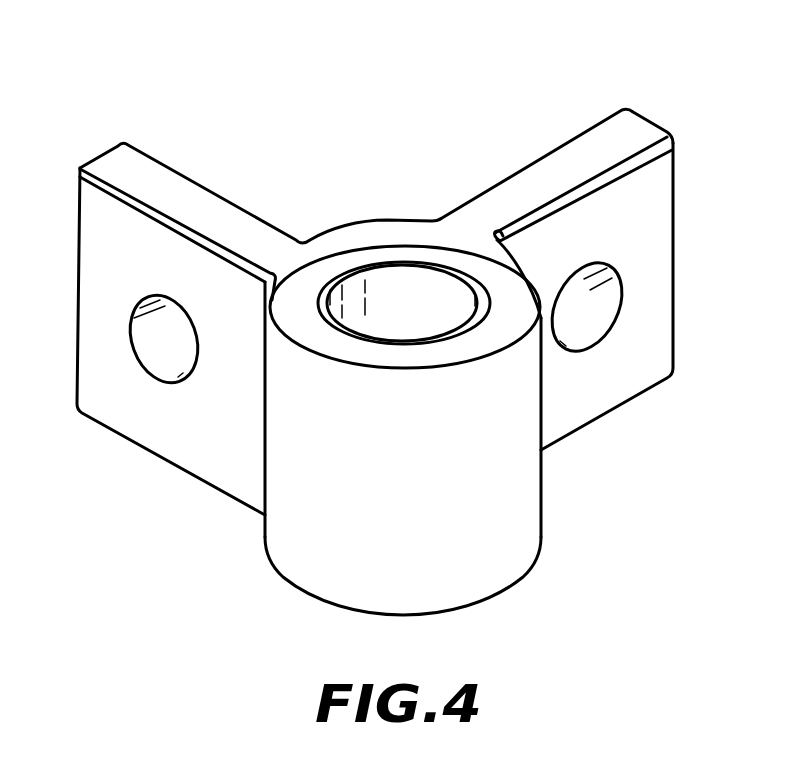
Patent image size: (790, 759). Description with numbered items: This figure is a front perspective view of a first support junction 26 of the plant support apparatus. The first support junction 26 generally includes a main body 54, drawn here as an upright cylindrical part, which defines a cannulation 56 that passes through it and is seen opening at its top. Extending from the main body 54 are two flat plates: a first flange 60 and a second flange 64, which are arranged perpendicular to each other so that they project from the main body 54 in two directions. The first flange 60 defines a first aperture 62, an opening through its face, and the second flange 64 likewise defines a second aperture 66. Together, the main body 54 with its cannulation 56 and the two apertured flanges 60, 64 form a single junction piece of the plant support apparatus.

The first support junction 26 is at (181, 66).
The main body 54 is at (510, 508).
The cannulation 56 is at (402, 298).
The first flange 60 is at (648, 198).
The first aperture 62 is at (593, 313).
The second flange 64 is at (112, 165).
The second aperture 66 is at (160, 347).